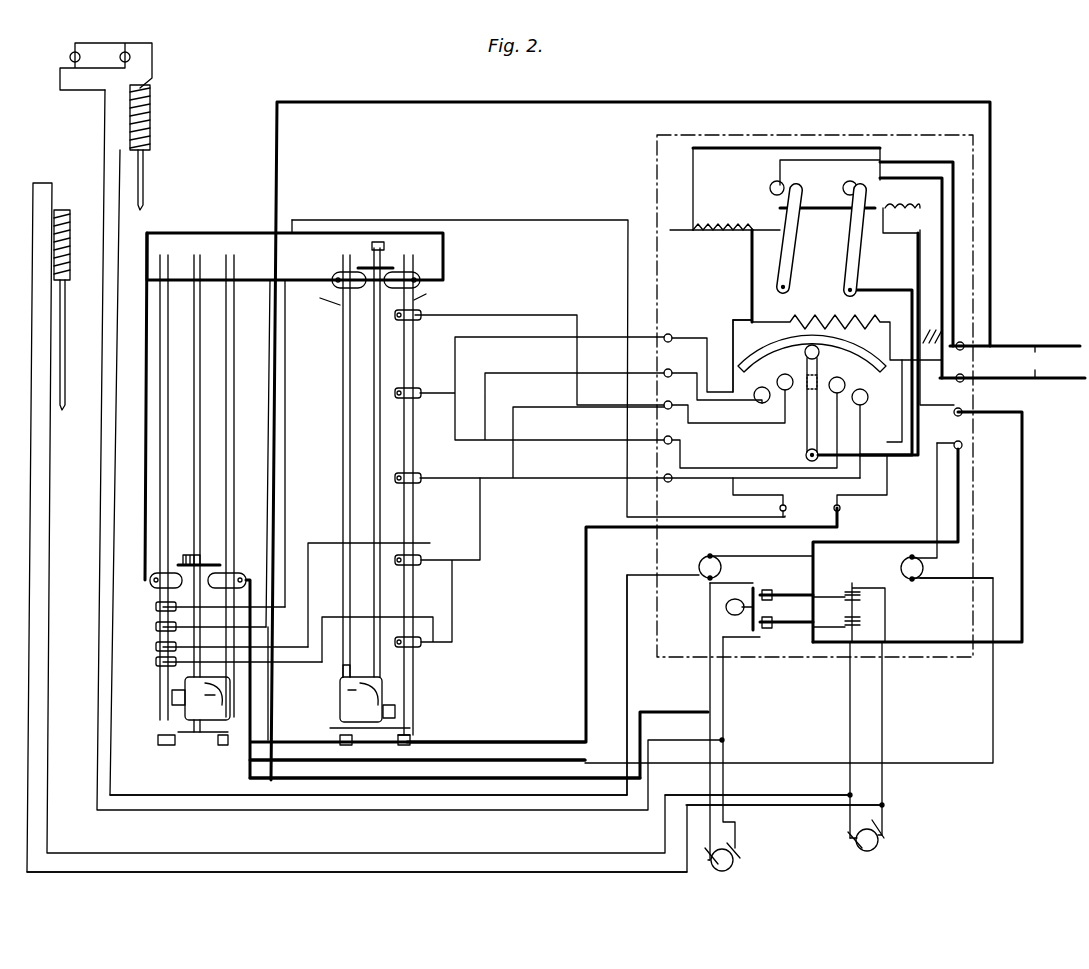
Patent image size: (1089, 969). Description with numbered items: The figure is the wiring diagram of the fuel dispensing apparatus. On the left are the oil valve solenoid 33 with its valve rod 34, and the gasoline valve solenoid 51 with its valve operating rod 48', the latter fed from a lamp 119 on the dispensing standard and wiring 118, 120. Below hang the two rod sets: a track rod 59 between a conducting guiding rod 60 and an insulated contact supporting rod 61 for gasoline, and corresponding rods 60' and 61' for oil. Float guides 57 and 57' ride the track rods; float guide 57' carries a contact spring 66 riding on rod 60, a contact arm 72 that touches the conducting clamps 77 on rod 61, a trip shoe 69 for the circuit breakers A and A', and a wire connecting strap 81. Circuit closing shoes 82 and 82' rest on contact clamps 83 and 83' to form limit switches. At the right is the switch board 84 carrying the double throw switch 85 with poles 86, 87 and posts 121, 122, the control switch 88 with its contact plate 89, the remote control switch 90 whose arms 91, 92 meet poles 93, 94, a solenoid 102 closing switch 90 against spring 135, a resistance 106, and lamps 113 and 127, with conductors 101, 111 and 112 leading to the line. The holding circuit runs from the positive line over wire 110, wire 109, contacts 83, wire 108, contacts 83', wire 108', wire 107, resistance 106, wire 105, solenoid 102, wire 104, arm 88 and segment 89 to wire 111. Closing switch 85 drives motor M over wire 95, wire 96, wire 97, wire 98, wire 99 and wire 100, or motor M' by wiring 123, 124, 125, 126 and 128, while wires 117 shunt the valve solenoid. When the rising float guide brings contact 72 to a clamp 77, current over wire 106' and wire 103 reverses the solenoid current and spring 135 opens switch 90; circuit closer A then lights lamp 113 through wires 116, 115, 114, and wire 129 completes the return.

The solenoid 33 is at (71, 242).
The valve rod 34 is at (64, 355).
The valve operating rod 48' is at (163, 180).
The solenoid 51 is at (152, 140).
The float guide 57 is at (176, 704).
The float guide 57' is at (403, 688).
The track rod 59 is at (202, 403).
The guiding rod 60 is at (319, 466).
The conducting rod 60' is at (246, 486).
The contact supporting rod 61 is at (428, 495).
The insulated rod 61' is at (180, 487).
The contact spring 66 is at (345, 690).
The trip shoe 69 is at (198, 745).
The contact arm 72 is at (396, 710).
The conducting clamps 77 is at (414, 480).
The wire connecting strap 81 is at (156, 612).
The circuit closing shoe 82 is at (538, 435).
The circuit closing shoe 82' is at (221, 539).
The contact clamps 83 is at (405, 269).
The contact clamps 83' is at (429, 645).
The switch board 84 is at (693, 181).
The double throw switch 85 is at (792, 622).
The pole 86 is at (768, 590).
The pole 87 is at (770, 629).
The control switch 88 is at (805, 438).
The contact plate 89 is at (860, 368).
The remote control switch 90 is at (830, 278).
The arm 91 is at (862, 262).
The arm 92 is at (770, 242).
The pole 93 is at (770, 192).
The pole 94 is at (845, 184).
The wire 95 is at (955, 242).
The wire 96 is at (902, 425).
The wire 97 is at (877, 542).
The wire 98 is at (708, 687).
The wire 99 is at (726, 723).
The wire 100 is at (1020, 642).
The conductor 101 is at (944, 302).
The solenoid 102 is at (693, 232).
The wire 103 is at (548, 420).
The wire 104 is at (916, 458).
The wire 105 is at (752, 287).
The resistance 106 is at (847, 337).
The wire 106' is at (721, 323).
The wire 107 is at (836, 500).
The wire 108 is at (99, 406).
The wire 108' is at (445, 740).
The wire 109 is at (318, 406).
The wire 110 is at (282, 150).
The wire 111 is at (937, 342).
The conductor 112 is at (940, 510).
The lamp 113 is at (703, 562).
The wire 114 is at (586, 665).
The wire 115 is at (282, 730).
The wire 116 is at (270, 425).
The wires 117 is at (640, 692).
The switch box 118 is at (155, 70).
The light 119 is at (124, 50).
The conductor 120 is at (70, 92).
The contact post 121 is at (850, 590).
The contact post 122 is at (850, 618).
The conductor 123 is at (885, 695).
The conductor 124 is at (850, 694).
The conductor 125 is at (785, 790).
The conductor 126 is at (424, 872).
The light 127 is at (912, 580).
The conductor 128 is at (960, 768).
The conductor 129 is at (250, 760).
The spring 135 is at (1002, 184).
The circuit breaker A is at (430, 721).
The circuit breaker A' is at (149, 753).
The motor M is at (742, 867).
The motor M' is at (891, 847).